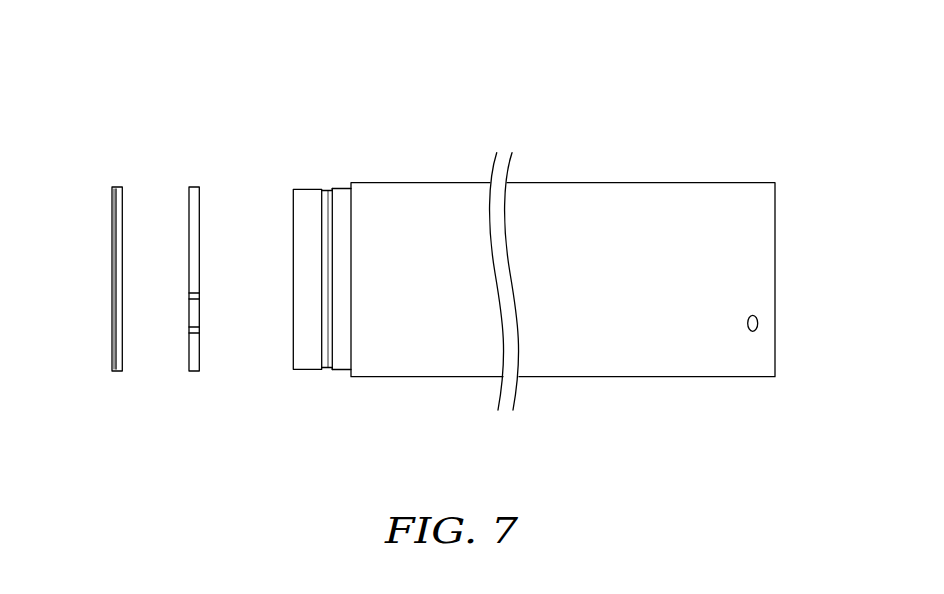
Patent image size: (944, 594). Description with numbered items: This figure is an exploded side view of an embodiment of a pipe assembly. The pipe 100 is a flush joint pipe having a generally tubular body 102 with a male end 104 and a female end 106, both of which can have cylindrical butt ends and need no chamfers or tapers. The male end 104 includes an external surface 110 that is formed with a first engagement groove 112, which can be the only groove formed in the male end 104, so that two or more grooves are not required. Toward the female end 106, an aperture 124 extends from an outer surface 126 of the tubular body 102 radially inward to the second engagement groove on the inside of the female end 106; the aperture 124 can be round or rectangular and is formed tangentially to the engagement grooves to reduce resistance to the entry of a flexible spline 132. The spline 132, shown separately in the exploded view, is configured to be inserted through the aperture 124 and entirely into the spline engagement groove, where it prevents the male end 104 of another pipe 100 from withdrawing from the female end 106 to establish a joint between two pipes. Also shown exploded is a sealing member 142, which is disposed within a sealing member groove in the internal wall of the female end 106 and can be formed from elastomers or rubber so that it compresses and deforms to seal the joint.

The pipe 100 is at (648, 84).
The tubular body 102 is at (590, 357).
The male end 104 is at (276, 388).
The female end 106 is at (752, 152).
The external surface 110 is at (298, 174).
The first engagement groove 112 is at (329, 365).
The aperture 124 is at (757, 318).
The outer surface 126 is at (757, 246).
The spline 132 is at (192, 187).
The sealing member 142 is at (115, 372).